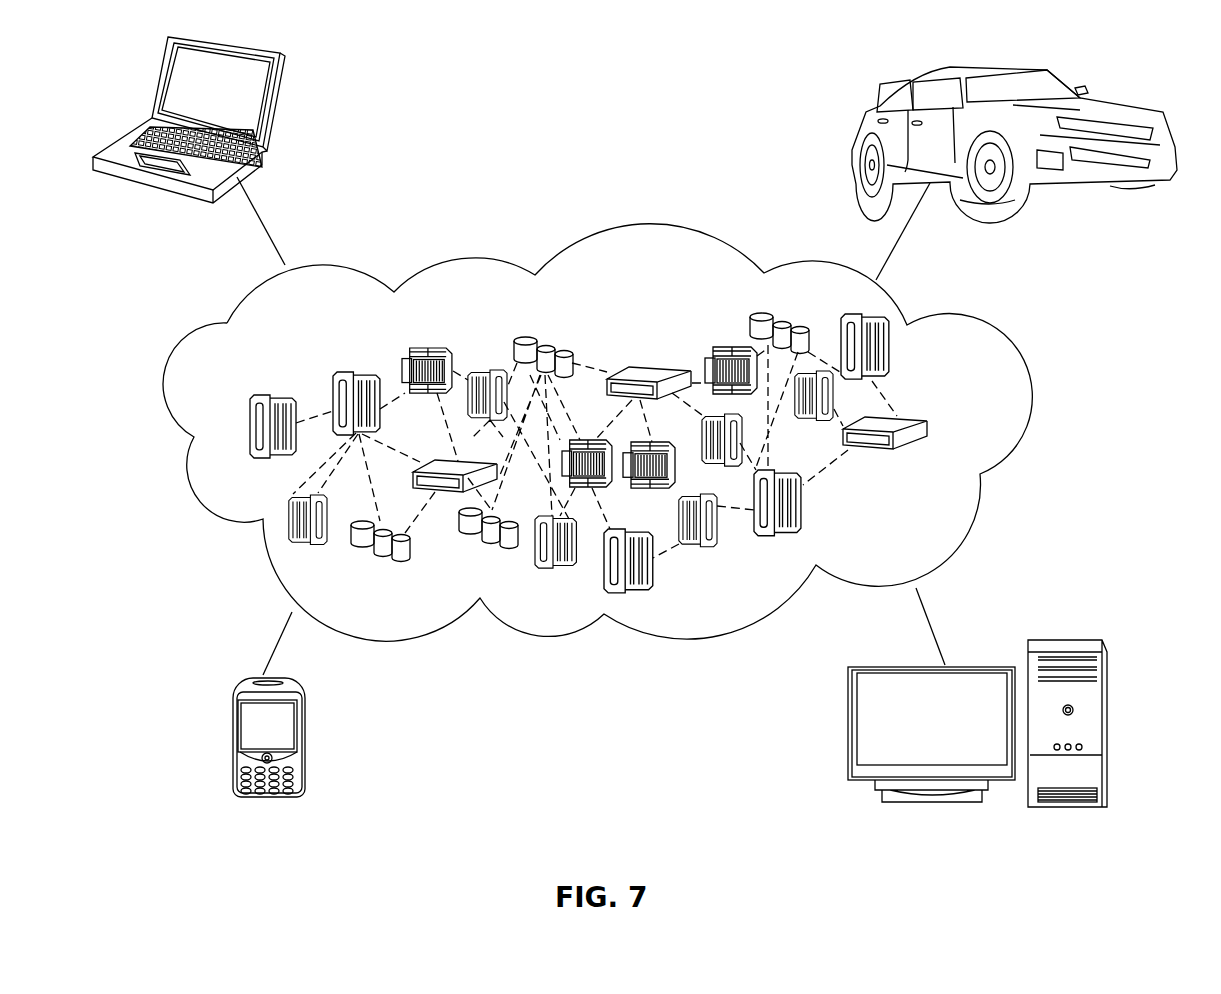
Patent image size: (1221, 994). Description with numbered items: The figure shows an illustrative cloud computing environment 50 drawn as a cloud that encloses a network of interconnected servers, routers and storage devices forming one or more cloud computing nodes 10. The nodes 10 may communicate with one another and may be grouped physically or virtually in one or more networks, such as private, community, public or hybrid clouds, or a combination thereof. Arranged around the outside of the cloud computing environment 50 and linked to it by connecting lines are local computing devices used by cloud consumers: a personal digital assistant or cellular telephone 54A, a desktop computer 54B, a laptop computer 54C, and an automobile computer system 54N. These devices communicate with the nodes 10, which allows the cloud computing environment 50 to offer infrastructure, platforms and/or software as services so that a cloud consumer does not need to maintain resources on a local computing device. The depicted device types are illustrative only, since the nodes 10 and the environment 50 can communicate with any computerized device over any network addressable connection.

The cloud computing node 10 is at (965, 427).
The cloud computing environment 50 is at (990, 340).
The personal digital assistant or cellular telephone 54A is at (233, 740).
The desktop computer 54B is at (1072, 640).
The laptop computer 54C is at (272, 105).
The automobile computer system 54N is at (858, 112).